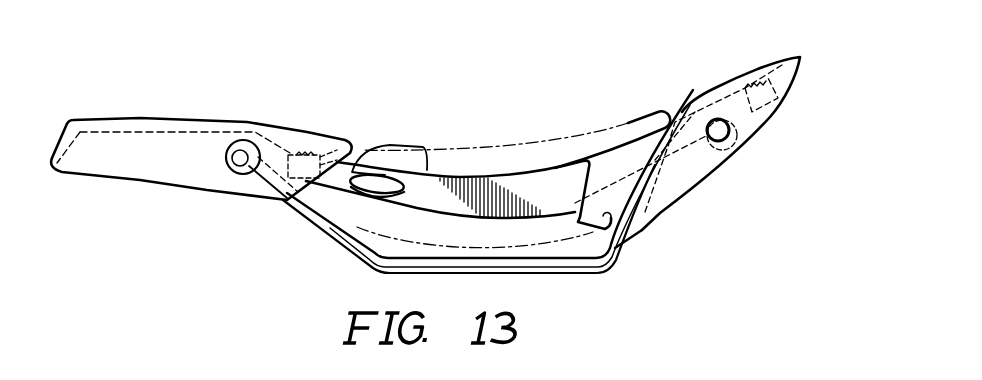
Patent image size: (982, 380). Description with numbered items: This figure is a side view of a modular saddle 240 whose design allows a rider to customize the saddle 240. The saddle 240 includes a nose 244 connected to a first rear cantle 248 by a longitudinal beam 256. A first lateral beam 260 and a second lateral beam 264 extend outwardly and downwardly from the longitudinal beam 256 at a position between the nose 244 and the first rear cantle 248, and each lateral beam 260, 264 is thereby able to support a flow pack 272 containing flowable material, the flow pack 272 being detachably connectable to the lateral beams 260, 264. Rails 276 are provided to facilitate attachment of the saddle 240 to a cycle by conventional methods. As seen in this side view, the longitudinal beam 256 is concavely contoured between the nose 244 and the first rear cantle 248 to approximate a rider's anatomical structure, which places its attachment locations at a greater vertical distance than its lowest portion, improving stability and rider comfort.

The saddle 240 is at (302, 127).
The nose 244 is at (103, 177).
The first rear cantle 248 is at (716, 172).
The longitudinal beam 256 is at (423, 173).
The first lateral beam 260 is at (380, 157).
The second lateral beam 264 is at (630, 234).
The flow pack 272 is at (540, 145).
The rails 276 is at (347, 242).